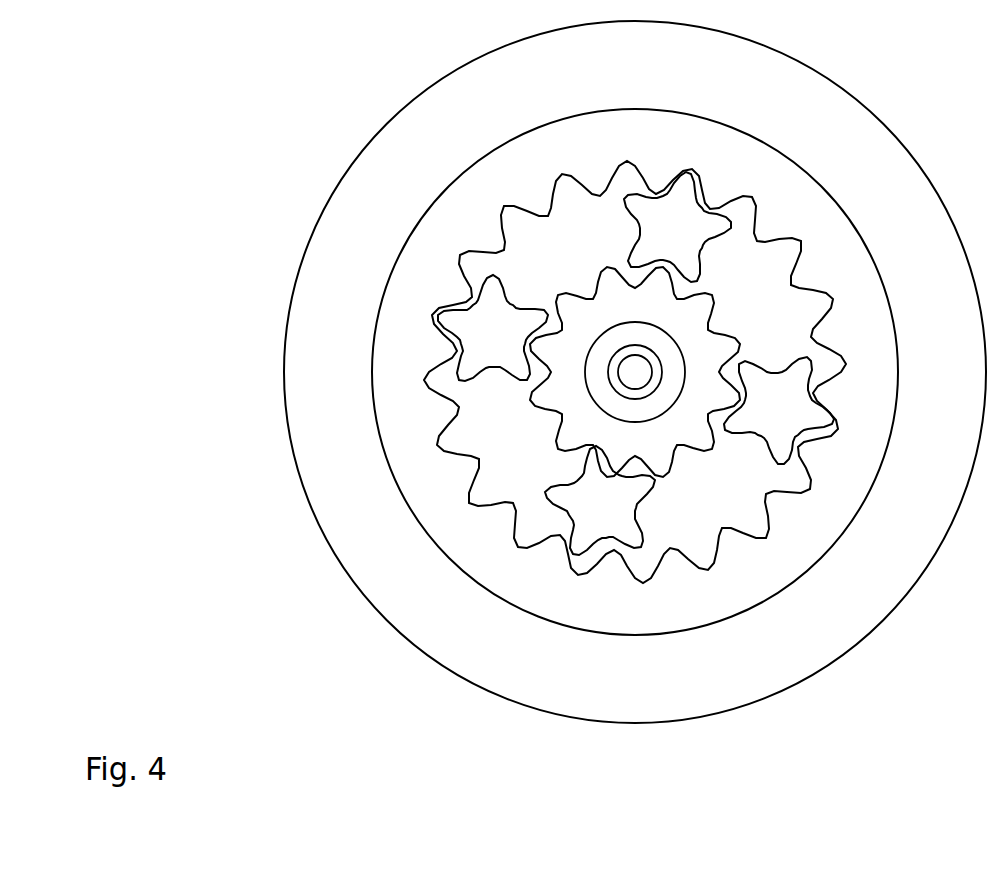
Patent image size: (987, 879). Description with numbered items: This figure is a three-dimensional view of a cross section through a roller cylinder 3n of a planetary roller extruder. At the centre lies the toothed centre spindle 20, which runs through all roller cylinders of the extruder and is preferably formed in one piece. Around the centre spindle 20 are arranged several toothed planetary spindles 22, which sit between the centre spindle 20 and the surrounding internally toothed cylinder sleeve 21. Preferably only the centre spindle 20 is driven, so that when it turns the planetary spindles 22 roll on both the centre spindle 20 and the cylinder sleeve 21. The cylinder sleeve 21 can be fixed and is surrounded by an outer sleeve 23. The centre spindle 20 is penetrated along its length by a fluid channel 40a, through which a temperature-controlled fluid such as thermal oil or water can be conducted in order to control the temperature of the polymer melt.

The roller cylinder 3n is at (233, 111).
The centre spindle 20 is at (685, 423).
The cylinder sleeve 21 is at (417, 435).
The planetary spindle 22 is at (490, 326).
The outer sleeve 23 is at (383, 538).
The fluid channel 40a is at (628, 378).